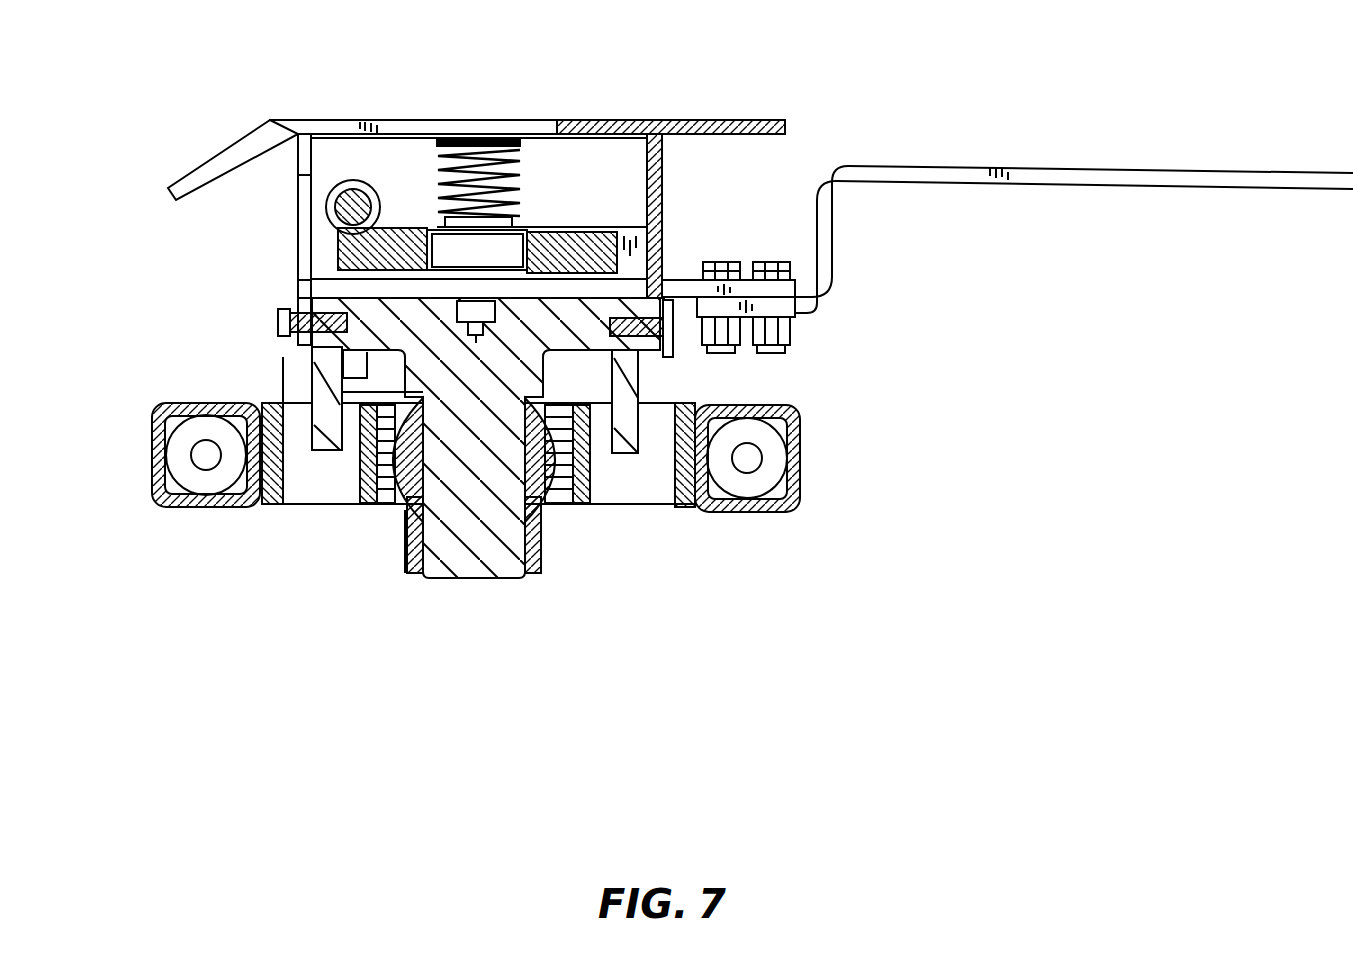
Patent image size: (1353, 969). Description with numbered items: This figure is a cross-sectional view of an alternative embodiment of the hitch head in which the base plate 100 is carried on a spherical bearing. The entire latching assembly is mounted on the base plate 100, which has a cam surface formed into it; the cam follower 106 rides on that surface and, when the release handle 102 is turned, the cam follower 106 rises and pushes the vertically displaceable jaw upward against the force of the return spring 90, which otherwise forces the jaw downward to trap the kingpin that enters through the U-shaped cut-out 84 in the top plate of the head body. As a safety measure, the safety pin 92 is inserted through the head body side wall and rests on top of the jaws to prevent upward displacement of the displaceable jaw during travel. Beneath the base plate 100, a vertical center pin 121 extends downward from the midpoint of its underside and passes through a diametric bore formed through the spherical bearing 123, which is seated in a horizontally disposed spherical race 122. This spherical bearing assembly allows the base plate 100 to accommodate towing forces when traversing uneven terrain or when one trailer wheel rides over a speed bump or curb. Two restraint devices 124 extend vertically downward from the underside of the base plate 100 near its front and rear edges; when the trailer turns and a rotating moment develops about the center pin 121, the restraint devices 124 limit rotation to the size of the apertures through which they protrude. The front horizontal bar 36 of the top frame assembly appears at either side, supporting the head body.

The front horizontal bar 36 is at (150, 465).
The U-shaped cut-out 84 is at (396, 120).
The return spring 90 is at (520, 196).
The safety pin 92 is at (350, 198).
The base plate 100 is at (597, 338).
The release handle 102 is at (980, 165).
The cam follower 106 is at (462, 290).
The vertical center pin 121 is at (472, 563).
The spherical race 122 is at (373, 463).
The spherical bearing 123 is at (415, 482).
The restraint device 124 is at (335, 428).